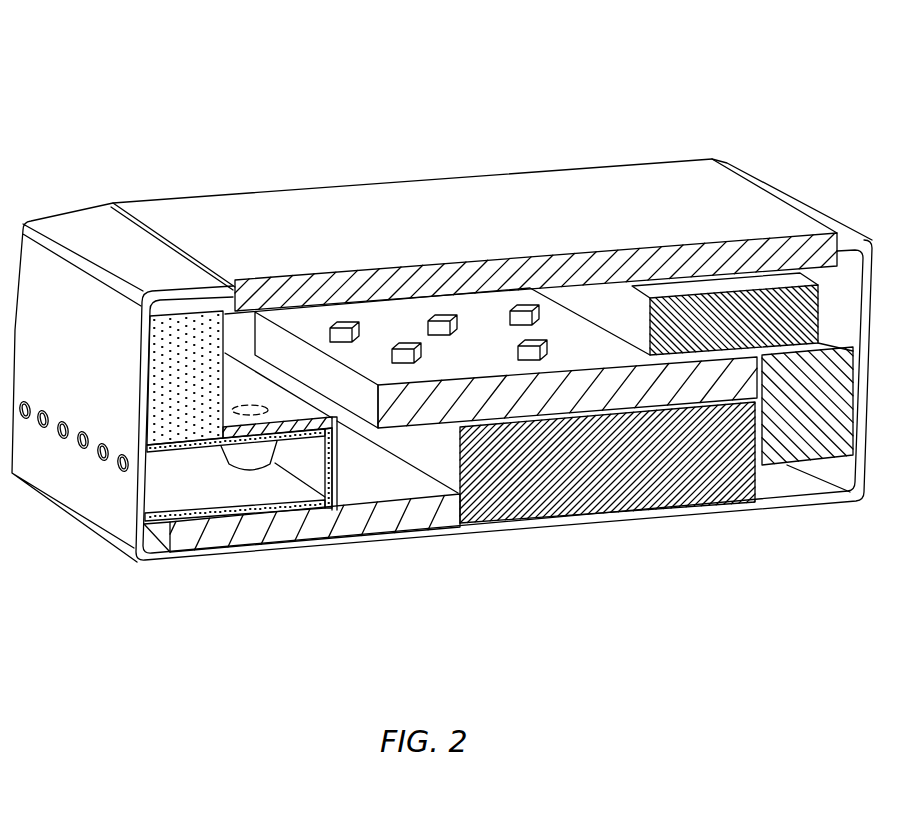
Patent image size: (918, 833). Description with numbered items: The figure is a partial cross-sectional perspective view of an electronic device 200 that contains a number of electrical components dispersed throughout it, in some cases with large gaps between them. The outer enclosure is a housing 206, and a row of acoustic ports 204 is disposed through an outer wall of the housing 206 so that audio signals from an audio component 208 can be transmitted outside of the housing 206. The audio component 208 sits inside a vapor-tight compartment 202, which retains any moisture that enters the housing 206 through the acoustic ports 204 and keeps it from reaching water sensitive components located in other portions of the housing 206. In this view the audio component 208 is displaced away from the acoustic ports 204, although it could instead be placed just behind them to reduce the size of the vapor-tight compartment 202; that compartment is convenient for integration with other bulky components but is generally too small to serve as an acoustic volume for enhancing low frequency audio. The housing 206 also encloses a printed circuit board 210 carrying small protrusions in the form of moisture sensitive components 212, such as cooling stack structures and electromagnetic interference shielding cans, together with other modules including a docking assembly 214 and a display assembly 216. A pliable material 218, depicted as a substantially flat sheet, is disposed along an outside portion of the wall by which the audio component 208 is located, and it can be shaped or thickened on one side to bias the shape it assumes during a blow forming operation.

The electronic device 200 is at (120, 74).
The vapor-tight compartment 202 is at (333, 490).
The acoustic ports 204 is at (123, 472).
The housing 206 is at (79, 358).
The audio component 208 is at (222, 464).
The printed circuit board (PCB) 210 is at (457, 416).
The moisture sensitive components 212 is at (518, 353).
The docking assembly 214 is at (199, 395).
The display assembly 216 is at (330, 303).
The pliable material 218 is at (338, 422).